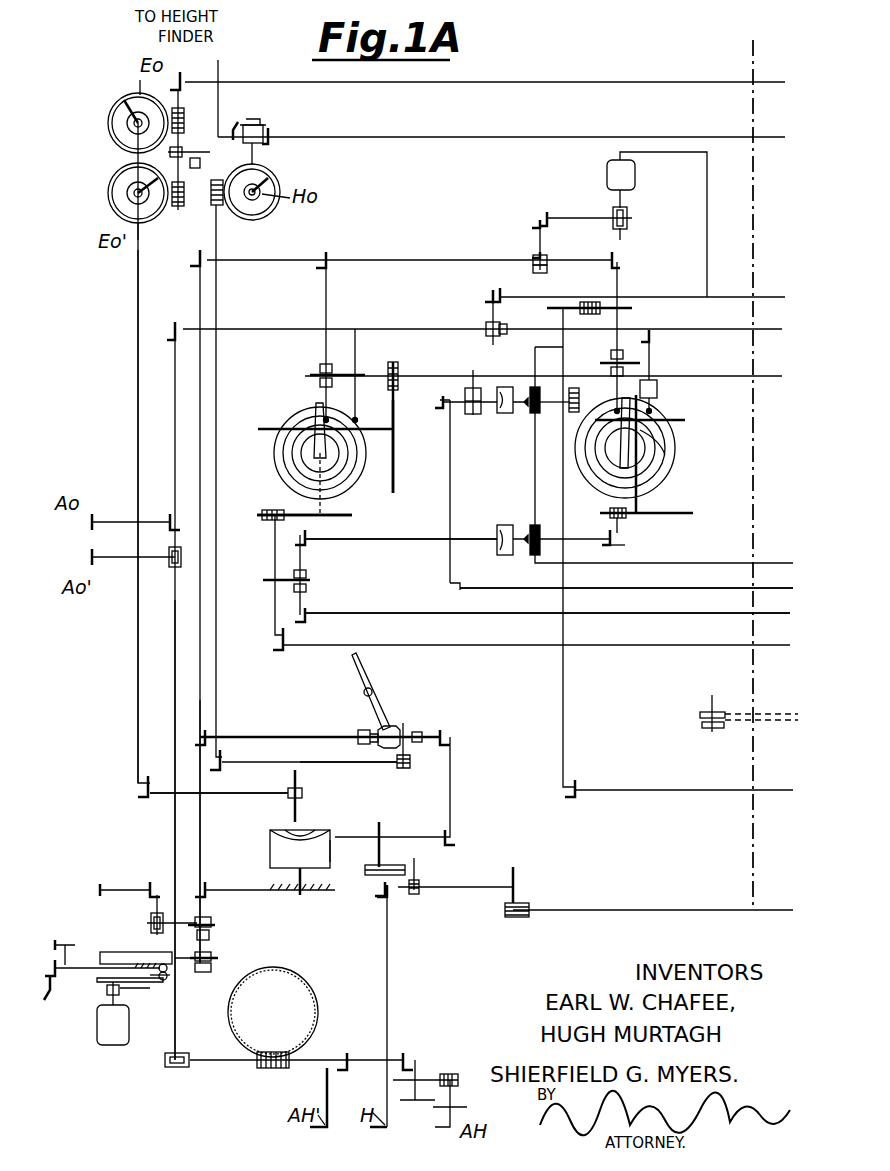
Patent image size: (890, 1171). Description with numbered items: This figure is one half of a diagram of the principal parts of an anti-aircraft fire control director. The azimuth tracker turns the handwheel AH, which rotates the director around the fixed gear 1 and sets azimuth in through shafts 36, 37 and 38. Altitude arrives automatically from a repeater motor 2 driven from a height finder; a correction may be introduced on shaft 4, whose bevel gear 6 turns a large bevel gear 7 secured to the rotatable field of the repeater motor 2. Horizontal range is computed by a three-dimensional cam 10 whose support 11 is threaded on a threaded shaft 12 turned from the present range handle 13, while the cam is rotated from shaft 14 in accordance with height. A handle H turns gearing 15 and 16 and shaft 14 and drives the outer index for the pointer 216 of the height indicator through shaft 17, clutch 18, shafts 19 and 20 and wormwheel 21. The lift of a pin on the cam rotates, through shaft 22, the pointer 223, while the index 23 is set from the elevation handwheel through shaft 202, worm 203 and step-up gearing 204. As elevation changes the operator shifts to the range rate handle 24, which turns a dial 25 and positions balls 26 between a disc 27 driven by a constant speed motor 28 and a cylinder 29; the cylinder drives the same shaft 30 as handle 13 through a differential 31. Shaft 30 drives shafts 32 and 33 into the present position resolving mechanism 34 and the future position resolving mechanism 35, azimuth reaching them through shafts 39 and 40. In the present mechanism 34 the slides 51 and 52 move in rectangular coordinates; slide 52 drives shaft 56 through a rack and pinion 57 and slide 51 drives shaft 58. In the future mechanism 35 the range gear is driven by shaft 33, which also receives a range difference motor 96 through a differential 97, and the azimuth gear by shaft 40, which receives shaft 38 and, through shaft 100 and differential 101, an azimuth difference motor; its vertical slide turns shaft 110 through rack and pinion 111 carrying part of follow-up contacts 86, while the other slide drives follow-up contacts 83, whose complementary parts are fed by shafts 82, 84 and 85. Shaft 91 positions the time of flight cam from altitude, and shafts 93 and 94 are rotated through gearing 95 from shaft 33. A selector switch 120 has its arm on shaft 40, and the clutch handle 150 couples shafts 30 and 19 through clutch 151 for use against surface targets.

The fixed gear 1 is at (273, 1017).
The repeater motor 2 is at (263, 124).
The shaft 4 is at (532, 137).
The bevel gear 6 is at (272, 133).
The large bevel gear 7 is at (236, 124).
The cam 10 is at (322, 832).
The support 11 is at (332, 852).
The threaded shaft 12 is at (330, 892).
The present range setting handle 13 is at (130, 905).
The shaft 14 is at (414, 838).
The gearing 15 is at (418, 884).
The gearing 16 is at (382, 866).
The shaft 17 is at (452, 780).
The clutch 18 is at (410, 732).
The shaft 19 is at (342, 766).
The shaft 20 is at (218, 614).
The wormwheel 21 is at (212, 208).
The shaft 22 is at (137, 418).
The index 23 is at (122, 105).
The range rate handle 24 is at (52, 992).
The dial 25 is at (55, 944).
The balls 26 is at (170, 975).
The disc 27 is at (100, 983).
The constant speed motor 28 is at (100, 1048).
The cylinder 29 is at (112, 952).
The shaft 30 is at (202, 858).
The differential 31 is at (210, 922).
The shaft 32 is at (324, 290).
The shaft 33 is at (626, 295).
The present position resolving mechanism 34 is at (300, 413).
The future position resolving mechanism 35 is at (664, 480).
The shaft 36 is at (364, 1058).
The shaft 37 is at (173, 826).
The shaft 38 is at (432, 328).
The shaft 39 is at (356, 350).
The shaft 40 is at (650, 360).
The plate 51 is at (352, 516).
The plate 52 is at (396, 452).
The shaft 56 is at (480, 376).
The rack and pinion connection 57 is at (398, 366).
The shaft 58 is at (275, 546).
The shaft 82 is at (306, 576).
The follow-up contacts 83 is at (510, 526).
The shaft 84 is at (656, 598).
The shaft 85 is at (452, 488).
The follow-up contacts 86 is at (508, 414).
The shaft 91 is at (656, 905).
The shaft 93 is at (680, 782).
The shaft 94 is at (565, 692).
The gearing 95 is at (585, 302).
The range difference motor 96 is at (636, 180).
The differential 97 is at (548, 258).
The shaft 100 is at (760, 296).
The differential 101 is at (500, 323).
The shaft 110 is at (661, 455).
The rack and pinion 111 is at (574, 386).
The selector switch 120 is at (658, 390).
The clutch handle 150 is at (370, 675).
The clutch 151 is at (360, 730).
The shaft 202 is at (603, 86).
The worm 203 is at (184, 112).
The step-up gearing 204 is at (182, 148).
The pointer 216 is at (262, 200).
The pointer 223 is at (125, 116).